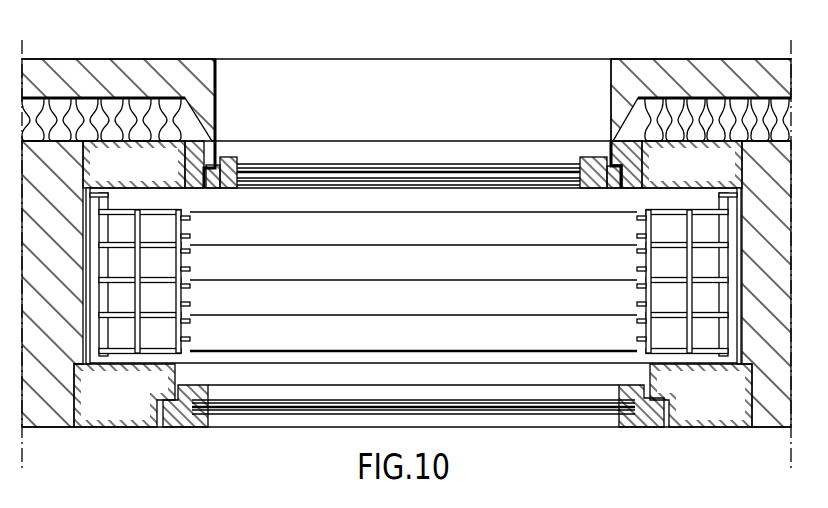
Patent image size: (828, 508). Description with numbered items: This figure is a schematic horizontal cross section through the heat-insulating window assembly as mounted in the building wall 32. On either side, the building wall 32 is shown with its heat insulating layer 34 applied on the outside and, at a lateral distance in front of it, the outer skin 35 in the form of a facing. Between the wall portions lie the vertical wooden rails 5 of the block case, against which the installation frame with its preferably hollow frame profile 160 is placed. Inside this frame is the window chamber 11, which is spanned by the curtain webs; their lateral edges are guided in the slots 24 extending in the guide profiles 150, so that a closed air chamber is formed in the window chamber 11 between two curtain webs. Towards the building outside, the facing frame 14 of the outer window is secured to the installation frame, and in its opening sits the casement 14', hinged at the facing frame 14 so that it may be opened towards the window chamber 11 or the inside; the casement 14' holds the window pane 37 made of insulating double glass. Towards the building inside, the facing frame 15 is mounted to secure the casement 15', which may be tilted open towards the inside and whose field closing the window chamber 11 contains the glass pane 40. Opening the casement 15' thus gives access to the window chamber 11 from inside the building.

The wooden rails 5 is at (98, 169).
The window chamber 11 is at (411, 311).
The facing frame of the outer window 14 is at (614, 143).
The casement 14' is at (585, 143).
The facing frame of the inner window 15 is at (413, 419).
The casement 15' is at (413, 430).
The slots 24 is at (185, 333).
The building wall 32 is at (52, 266).
The heat insulating layer 34 is at (755, 118).
The outer skin 35 is at (716, 72).
The window pane 37 is at (287, 165).
The glass pane 40 is at (238, 405).
The guide profiles 150 is at (208, 262).
The frame profile 160 is at (742, 276).